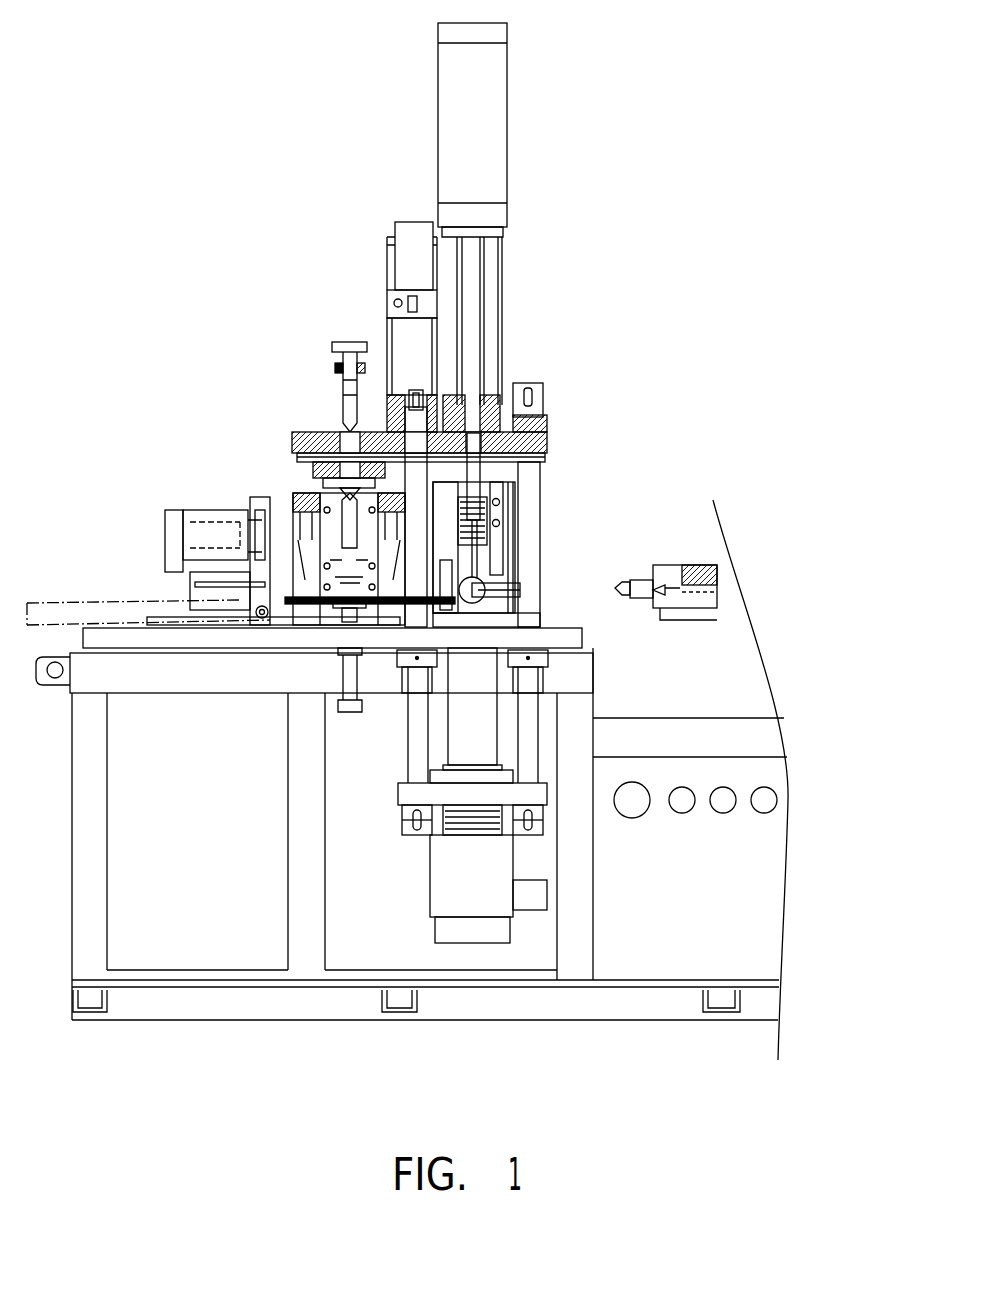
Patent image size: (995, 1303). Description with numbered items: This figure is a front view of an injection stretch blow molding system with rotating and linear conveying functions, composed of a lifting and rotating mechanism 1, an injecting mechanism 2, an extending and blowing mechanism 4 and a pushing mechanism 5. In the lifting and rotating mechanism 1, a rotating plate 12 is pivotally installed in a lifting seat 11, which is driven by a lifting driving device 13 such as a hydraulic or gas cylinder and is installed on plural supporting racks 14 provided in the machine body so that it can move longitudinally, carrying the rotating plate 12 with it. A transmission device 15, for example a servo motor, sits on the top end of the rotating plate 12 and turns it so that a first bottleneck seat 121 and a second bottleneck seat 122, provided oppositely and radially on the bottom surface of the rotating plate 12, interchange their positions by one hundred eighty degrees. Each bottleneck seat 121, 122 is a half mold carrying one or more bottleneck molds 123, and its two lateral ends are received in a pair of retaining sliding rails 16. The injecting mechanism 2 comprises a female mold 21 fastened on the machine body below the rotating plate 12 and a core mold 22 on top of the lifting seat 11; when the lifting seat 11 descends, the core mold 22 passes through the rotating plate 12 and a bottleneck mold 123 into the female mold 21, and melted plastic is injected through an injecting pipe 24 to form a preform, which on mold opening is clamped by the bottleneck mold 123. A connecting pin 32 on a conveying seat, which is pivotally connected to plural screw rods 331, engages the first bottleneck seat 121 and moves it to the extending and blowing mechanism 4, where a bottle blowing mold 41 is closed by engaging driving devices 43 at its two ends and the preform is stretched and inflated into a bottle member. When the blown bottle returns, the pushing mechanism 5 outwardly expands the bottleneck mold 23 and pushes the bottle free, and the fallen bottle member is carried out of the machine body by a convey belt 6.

The lifting and rotating mechanism 1 is at (548, 492).
The injecting mechanism 2 is at (485, 570).
The extending and blowing mechanism 4 is at (198, 502).
The pushing mechanism 5 is at (348, 340).
The convey belt 6 is at (63, 612).
The lifting seat 11 is at (547, 425).
The rotating plate 12 is at (543, 462).
The lifting driving device 13 is at (472, 302).
The supporting racks 14 is at (530, 560).
The transmission device 15 is at (408, 333).
The retaining sliding rails 16 is at (312, 466).
The female mold 21 is at (493, 542).
The core mold 22 is at (483, 518).
The drive motor 23 is at (485, 862).
The injecting pipe 24 is at (640, 597).
The connecting pin 32 is at (330, 463).
The bottle blowing mold 41 is at (277, 525).
The engaging driving devices 43 is at (193, 538).
The first bottleneck seat 121 is at (500, 485).
The second bottleneck seat 122 is at (333, 484).
The bottleneck mold 123 is at (483, 505).
The screw rods 331 is at (226, 574).